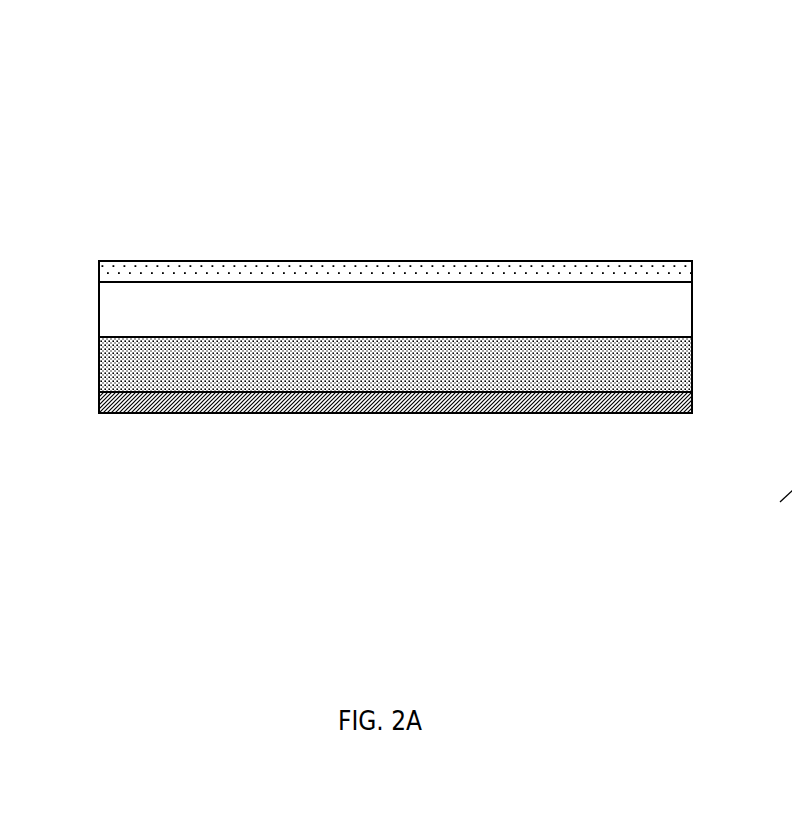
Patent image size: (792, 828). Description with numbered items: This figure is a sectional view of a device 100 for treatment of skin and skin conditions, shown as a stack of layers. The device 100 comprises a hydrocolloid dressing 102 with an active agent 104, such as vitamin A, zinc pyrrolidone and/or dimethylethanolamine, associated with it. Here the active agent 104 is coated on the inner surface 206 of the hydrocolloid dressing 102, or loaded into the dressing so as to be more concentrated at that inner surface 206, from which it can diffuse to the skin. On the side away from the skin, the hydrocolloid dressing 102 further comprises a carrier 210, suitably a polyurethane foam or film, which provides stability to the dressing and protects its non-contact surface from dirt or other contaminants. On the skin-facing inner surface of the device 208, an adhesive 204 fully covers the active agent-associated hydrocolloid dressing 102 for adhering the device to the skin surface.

The device 100 is at (510, 161).
The hydrocolloid dressing 102 is at (492, 303).
The active agent 104 is at (367, 367).
The adhesive 204 is at (297, 415).
The inner surface 206 is at (656, 336).
The inner surface of the device 208 is at (630, 413).
The carrier 210 is at (553, 268).